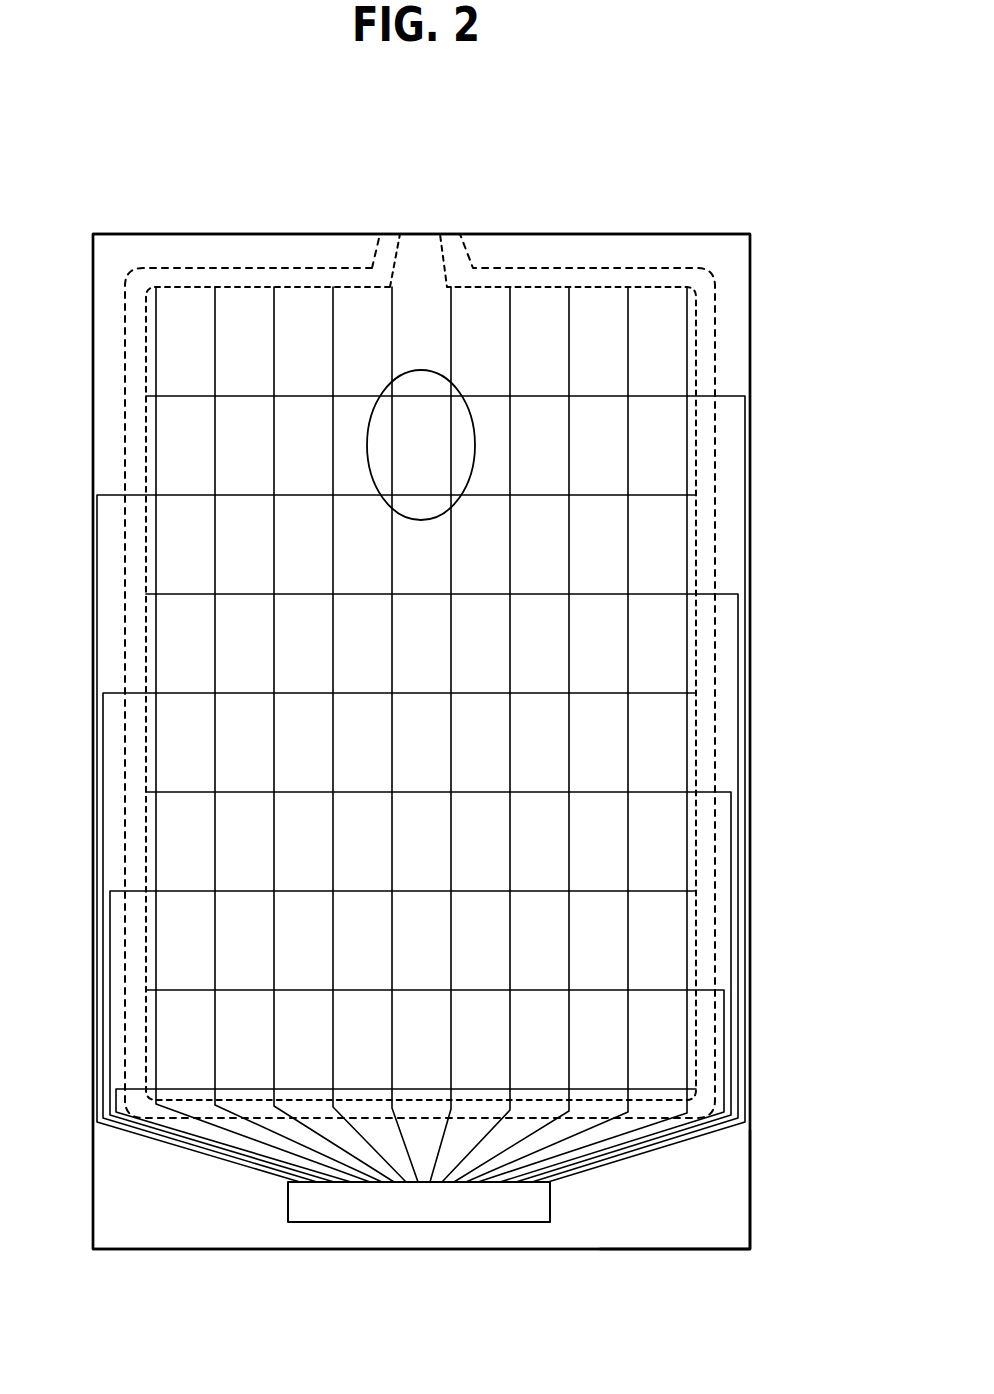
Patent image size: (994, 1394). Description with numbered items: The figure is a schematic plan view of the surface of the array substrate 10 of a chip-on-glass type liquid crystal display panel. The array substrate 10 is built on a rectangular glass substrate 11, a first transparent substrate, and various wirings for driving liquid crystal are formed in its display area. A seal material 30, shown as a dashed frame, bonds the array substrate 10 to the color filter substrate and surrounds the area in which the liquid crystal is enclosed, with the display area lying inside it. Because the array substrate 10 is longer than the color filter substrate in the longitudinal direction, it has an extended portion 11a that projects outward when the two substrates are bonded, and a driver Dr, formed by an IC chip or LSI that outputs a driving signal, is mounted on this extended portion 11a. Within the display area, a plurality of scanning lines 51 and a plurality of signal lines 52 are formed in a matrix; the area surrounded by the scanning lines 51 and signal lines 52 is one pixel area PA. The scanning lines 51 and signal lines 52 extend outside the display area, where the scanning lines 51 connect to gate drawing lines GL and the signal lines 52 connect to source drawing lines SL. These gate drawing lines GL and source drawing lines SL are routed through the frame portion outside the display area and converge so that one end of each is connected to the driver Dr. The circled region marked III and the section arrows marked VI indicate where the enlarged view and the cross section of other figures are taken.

The array substrate 10 is at (192, 123).
The glass substrate 11 is at (722, 1158).
The extended portion 11a is at (722, 1203).
The seal material 30 is at (717, 350).
The pixel area PA is at (682, 556).
The scanning line 51 is at (188, 396).
The signal line 52 is at (156, 467).
The gate drawing line GL is at (191, 1166).
The source drawing line SL is at (481, 1177).
The driver Dr is at (335, 1198).
The section III region III is at (393, 380).
The section VI line VI is at (537, 258).